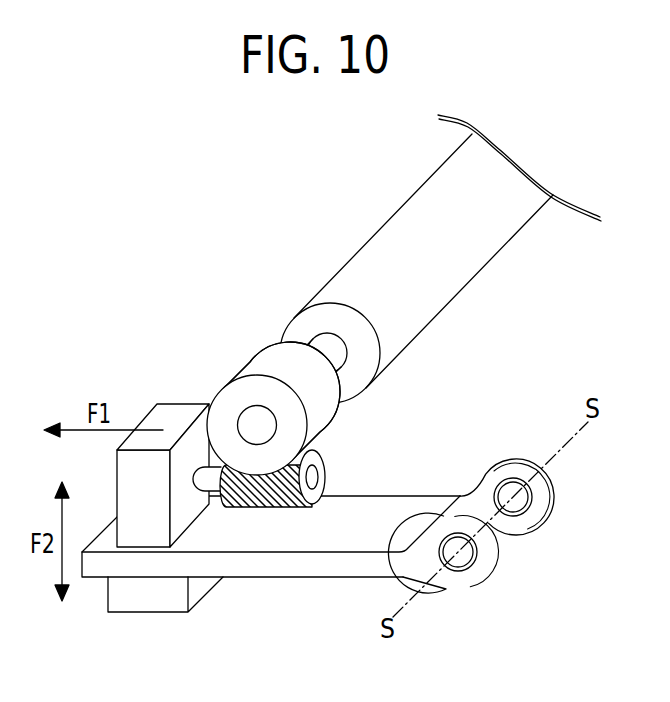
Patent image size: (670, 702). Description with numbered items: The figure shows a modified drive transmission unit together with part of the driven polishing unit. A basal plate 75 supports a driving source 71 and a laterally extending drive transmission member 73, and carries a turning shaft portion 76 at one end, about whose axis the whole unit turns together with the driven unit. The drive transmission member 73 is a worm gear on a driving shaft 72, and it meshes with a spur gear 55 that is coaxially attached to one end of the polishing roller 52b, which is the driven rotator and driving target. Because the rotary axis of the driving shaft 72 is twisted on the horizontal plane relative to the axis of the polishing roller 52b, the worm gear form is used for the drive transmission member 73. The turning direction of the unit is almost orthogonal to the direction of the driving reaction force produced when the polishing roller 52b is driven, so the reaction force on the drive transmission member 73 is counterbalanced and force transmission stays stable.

The polishing roller 52b is at (443, 297).
The spur gear 55 is at (308, 427).
The drive transmission member 73 is at (323, 478).
The driving shaft 72 is at (202, 480).
The driving source 71 is at (145, 537).
The basal plate 75 is at (340, 577).
The turning shaft portion 76 is at (477, 572).